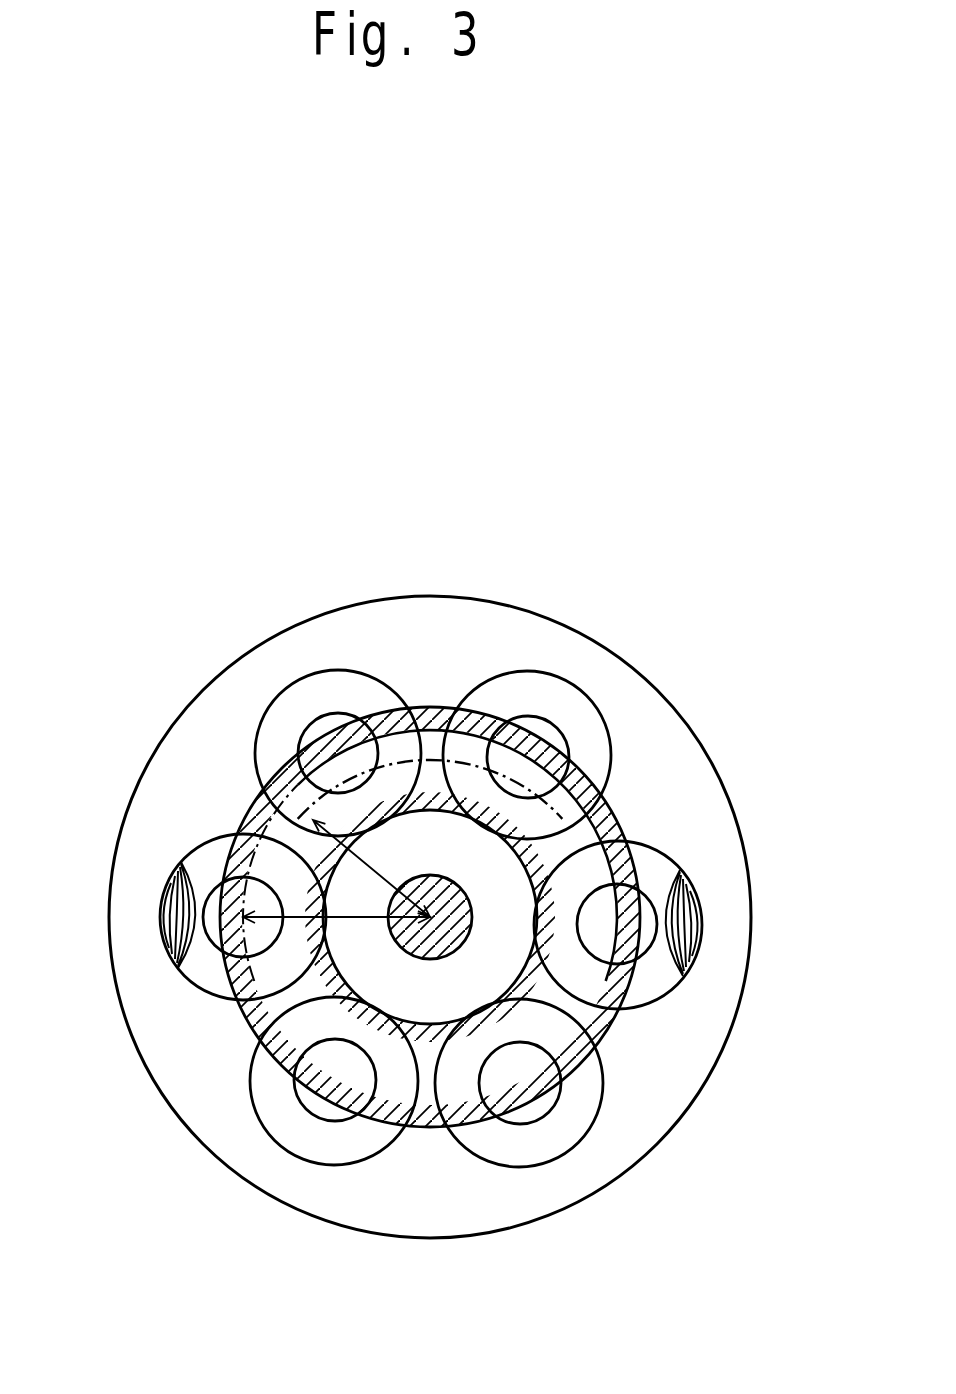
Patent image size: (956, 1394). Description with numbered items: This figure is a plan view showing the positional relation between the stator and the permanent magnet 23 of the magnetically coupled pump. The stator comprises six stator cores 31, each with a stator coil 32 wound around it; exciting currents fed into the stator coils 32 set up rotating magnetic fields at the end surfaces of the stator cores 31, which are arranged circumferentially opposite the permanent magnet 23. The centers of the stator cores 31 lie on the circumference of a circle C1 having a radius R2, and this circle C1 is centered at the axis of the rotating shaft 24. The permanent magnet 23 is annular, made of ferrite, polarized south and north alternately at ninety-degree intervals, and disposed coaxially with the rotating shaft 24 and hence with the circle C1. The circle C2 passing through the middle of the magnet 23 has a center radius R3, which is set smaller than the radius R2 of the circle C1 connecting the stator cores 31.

The permanent magnet 23 is at (462, 706).
The rotating shaft 24 is at (453, 888).
The stator cores 31 is at (312, 737).
The stator coils 32 is at (178, 884).
The circle connecting the centers of the stator cores C1 is at (258, 792).
The circle passing through the center of the magnet C2 is at (386, 760).
The radius of circle C1 R2 is at (336, 903).
The center radius R3 is at (371, 868).